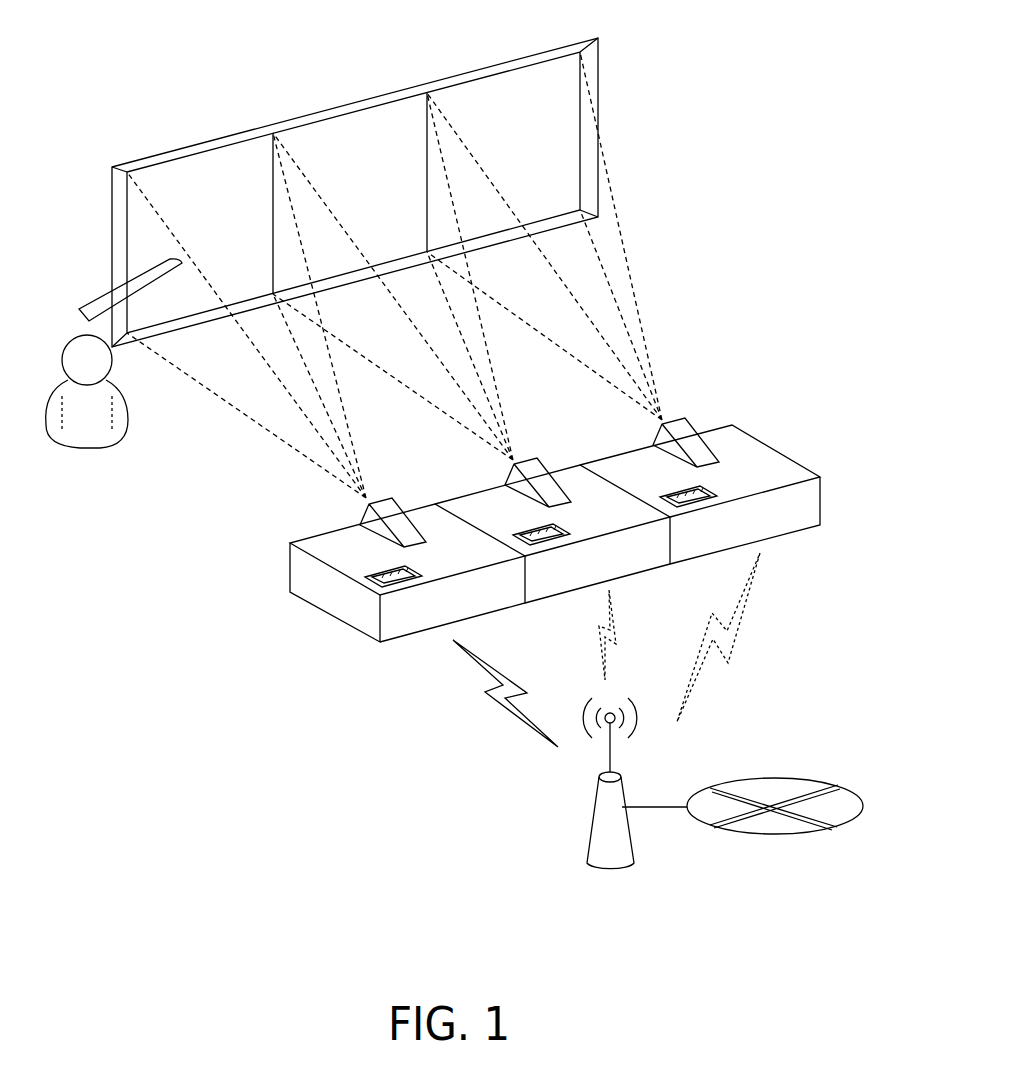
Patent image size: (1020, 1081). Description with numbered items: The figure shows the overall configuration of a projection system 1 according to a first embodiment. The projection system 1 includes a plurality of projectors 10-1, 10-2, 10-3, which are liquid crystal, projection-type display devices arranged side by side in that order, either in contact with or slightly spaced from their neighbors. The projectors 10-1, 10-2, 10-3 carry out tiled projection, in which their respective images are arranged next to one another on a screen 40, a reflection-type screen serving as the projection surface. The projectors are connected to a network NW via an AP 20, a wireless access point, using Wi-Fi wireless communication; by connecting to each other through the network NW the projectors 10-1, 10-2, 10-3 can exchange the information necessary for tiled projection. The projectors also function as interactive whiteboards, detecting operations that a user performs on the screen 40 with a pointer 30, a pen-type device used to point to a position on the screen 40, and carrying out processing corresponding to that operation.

The projection system 1 is at (772, 239).
The screen 40 is at (600, 76).
The pointer 30 is at (107, 292).
The projector 10-1 is at (330, 552).
The projector 10-2 is at (578, 482).
The projector 10-3 is at (767, 462).
The AP 20 is at (600, 838).
The network NW is at (790, 778).